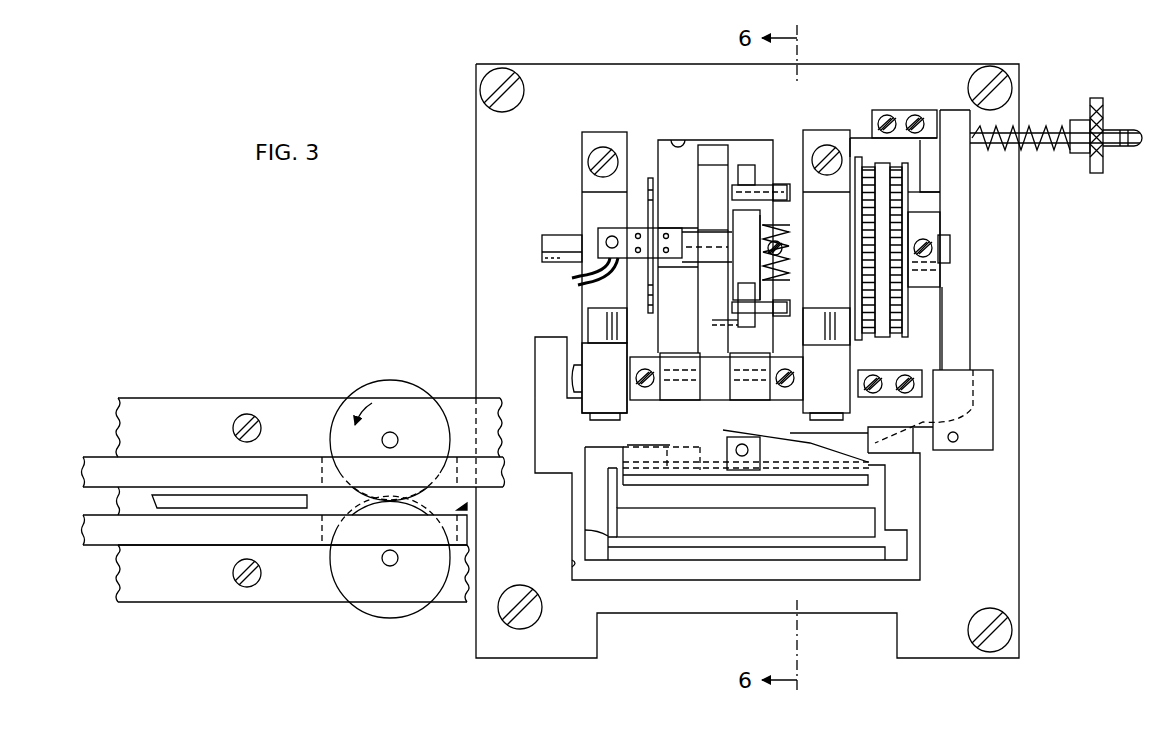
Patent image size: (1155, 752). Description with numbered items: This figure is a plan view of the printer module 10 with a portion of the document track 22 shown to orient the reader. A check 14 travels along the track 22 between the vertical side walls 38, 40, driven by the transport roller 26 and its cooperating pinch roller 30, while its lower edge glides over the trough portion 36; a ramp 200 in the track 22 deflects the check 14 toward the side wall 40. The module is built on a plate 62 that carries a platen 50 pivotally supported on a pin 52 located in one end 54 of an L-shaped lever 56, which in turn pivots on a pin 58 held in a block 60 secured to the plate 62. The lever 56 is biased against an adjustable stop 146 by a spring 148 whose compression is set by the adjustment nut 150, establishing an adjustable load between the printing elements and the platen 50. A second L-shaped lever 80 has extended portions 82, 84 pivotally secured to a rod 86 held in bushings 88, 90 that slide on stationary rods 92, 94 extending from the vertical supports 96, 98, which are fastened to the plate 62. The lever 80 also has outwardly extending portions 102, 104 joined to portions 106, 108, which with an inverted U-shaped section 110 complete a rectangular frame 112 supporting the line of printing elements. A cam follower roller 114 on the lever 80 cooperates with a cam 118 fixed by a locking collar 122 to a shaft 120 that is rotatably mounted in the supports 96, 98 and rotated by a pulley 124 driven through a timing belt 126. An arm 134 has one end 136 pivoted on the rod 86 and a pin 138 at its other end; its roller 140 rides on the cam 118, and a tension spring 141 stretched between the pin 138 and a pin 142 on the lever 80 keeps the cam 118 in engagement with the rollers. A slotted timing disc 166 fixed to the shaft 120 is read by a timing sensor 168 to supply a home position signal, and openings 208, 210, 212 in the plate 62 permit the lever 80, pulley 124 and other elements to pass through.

The printer module 10 is at (884, 58).
The check 14 is at (252, 488).
The document track 22 is at (110, 443).
The transport roller 26 is at (376, 398).
The pinch roller 30 is at (365, 603).
The trough portion 36 is at (130, 502).
The side wall 38 is at (107, 535).
The side wall 40 is at (90, 468).
The platen 50 is at (683, 460).
The pin 52 is at (745, 458).
The end of L-shaped lever 54 is at (920, 458).
The L-shaped lever 56 is at (965, 286).
The pin 58 is at (960, 437).
The block 60 is at (988, 384).
The plate 62 is at (1020, 512).
The L-shaped lever 80 is at (715, 158).
The extended portion 82 is at (700, 362).
The extended portion 84 is at (752, 366).
The rod 86 is at (574, 378).
The bushing 88 is at (592, 355).
The bushing 90 is at (832, 356).
The stationary rod 92 is at (592, 321).
The stationary rod 94 is at (820, 320).
The vertical support 96 is at (596, 204).
The vertical support 98 is at (883, 165).
The outwardly extending portion 102 is at (723, 430).
The outwardly extending portion 104 is at (990, 406).
The portion 106 is at (600, 498).
The portion 108 is at (900, 520).
The inverted U-shaped section 110 is at (676, 545).
The rectangular frame 112 is at (712, 550).
The cam follower roller 114 is at (750, 165).
The cam 118 is at (786, 184).
The shaft 120 is at (952, 243).
The locking collar 122 is at (778, 255).
The pulley 124 is at (900, 190).
The timing belt 126 is at (882, 190).
The arm 134 is at (718, 295).
The end of arm 136 is at (718, 395).
The pin 138 is at (781, 316).
The roller 140 is at (738, 322).
The tension spring 141 is at (792, 228).
The pin 142 is at (748, 210).
The adjustable stop 146 is at (925, 133).
The spring 148 is at (1062, 128).
The adjustment nut 150 is at (1097, 105).
The timing disc 166 is at (650, 178).
The timing sensor 168 is at (604, 236).
The ramp 200 is at (470, 510).
The opening 208 is at (572, 563).
The opening 210 is at (681, 140).
The opening 212 is at (920, 150).